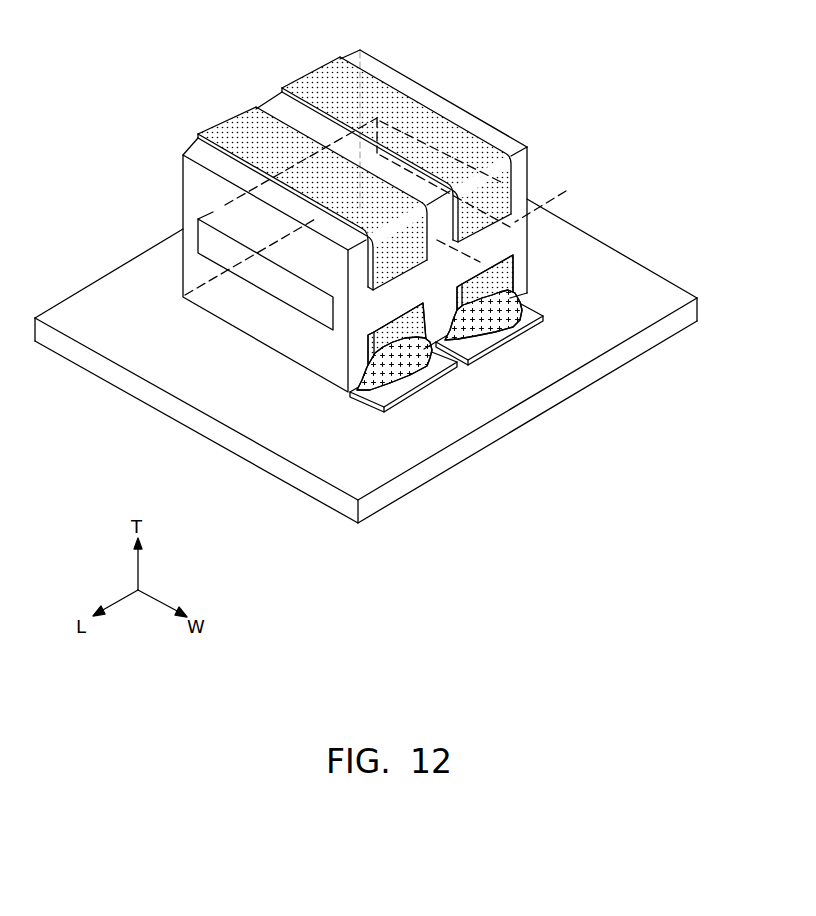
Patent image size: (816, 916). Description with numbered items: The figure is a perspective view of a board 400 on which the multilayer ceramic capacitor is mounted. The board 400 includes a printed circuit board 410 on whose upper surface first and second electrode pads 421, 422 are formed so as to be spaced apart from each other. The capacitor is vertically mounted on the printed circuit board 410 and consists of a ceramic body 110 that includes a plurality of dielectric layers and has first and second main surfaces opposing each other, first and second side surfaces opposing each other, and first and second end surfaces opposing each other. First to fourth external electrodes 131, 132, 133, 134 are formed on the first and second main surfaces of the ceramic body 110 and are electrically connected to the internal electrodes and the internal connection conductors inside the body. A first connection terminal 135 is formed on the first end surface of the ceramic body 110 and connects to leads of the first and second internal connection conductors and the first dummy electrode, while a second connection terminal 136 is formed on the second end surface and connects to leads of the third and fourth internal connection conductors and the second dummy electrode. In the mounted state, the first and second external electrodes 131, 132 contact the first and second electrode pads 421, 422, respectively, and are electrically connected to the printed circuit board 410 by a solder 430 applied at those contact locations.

The ceramic body 110 is at (423, 102).
The first external electrode 131 is at (386, 347).
The second external electrode 132 is at (518, 308).
The third external electrode 133 is at (235, 127).
The fourth external electrode 134 is at (320, 82).
The first connection terminal 135 is at (204, 237).
The second connection terminal 136 is at (570, 187).
The board 400 is at (366, 381).
The printed circuit board 410 is at (127, 340).
The first electrode pad 421 is at (400, 402).
The second electrode pad 422 is at (483, 353).
The solder 430 is at (420, 370).